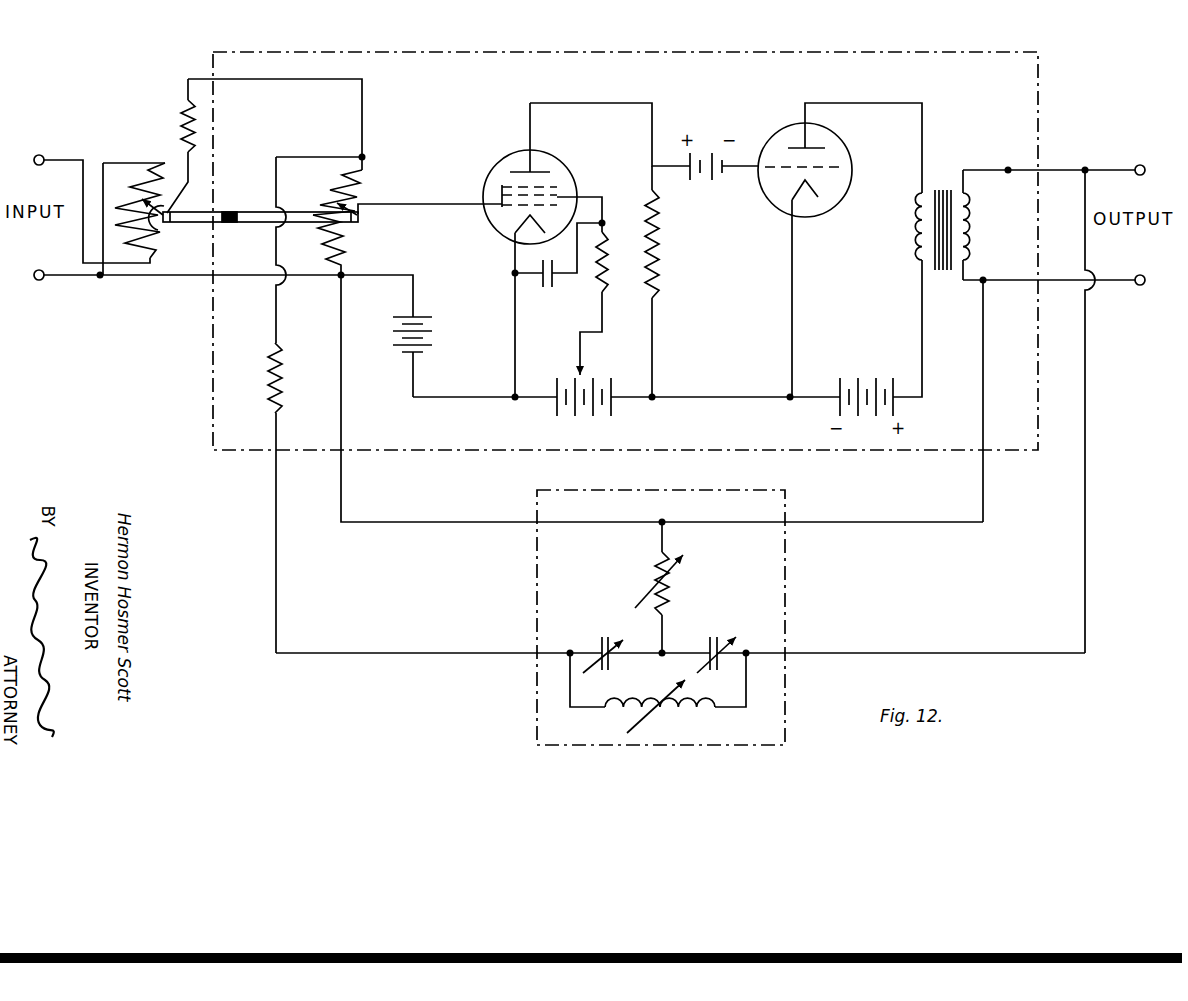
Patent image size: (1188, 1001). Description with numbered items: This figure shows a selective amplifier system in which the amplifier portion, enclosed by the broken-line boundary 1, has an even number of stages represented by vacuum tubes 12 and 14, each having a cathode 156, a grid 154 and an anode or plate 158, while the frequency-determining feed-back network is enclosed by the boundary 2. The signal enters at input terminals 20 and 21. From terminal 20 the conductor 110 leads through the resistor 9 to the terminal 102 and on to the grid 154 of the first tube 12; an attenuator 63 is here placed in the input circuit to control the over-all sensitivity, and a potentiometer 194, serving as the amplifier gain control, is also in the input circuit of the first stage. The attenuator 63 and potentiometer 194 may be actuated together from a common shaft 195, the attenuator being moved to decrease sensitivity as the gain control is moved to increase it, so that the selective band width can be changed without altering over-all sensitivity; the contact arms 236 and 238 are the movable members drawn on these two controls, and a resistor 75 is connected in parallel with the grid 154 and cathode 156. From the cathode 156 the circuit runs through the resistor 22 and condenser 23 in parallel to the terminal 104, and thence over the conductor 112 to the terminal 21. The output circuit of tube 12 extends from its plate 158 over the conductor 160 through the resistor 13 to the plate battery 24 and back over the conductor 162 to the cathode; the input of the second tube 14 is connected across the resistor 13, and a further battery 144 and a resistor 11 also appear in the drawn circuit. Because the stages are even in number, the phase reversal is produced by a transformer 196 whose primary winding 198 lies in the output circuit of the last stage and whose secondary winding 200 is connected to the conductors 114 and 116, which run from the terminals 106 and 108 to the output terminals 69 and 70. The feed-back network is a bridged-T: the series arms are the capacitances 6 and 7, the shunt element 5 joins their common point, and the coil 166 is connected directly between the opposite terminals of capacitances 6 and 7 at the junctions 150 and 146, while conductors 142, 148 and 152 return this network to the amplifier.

The amplifier unit 1 is at (737, 50).
The tuned circuit unit 2 is at (595, 746).
The circuit element 5 is at (668, 587).
The capacitance 6 is at (607, 638).
The capacitance 7 is at (718, 635).
The resistor 9 is at (186, 116).
The resistor 11 is at (285, 347).
The vacuum tube 12 is at (512, 152).
The resistor 13 is at (660, 243).
The vacuum tube 14 is at (848, 142).
The terminal 20 is at (41, 154).
The terminal 21 is at (40, 281).
The resistor 22 is at (608, 245).
The condenser 23 is at (560, 287).
The plate battery 24 is at (612, 383).
The attenuator 63 is at (143, 172).
The output terminal 69 is at (1141, 164).
The output terminal 70 is at (1140, 286).
The resistor 75 is at (347, 256).
The terminal 102 is at (392, 217).
The terminal 104 is at (511, 393).
The terminal 106 is at (1008, 167).
The terminal 108 is at (343, 278).
The conductor 110 is at (70, 157).
The conductor 112 is at (77, 278).
The conductor 114 is at (1063, 168).
The conductor 116 is at (1057, 280).
The conductor 142 is at (405, 520).
The battery 144 is at (390, 275).
The junction 146 is at (750, 647).
The conductor 148 is at (878, 655).
The junction 150 is at (570, 647).
The conductor 152 is at (368, 655).
The grid 154 is at (560, 193).
The cathode 156 is at (537, 227).
The anode 158 is at (540, 170).
The conductor 160 is at (607, 103).
The conductor 162 is at (533, 399).
The coil 166 is at (700, 715).
The potentiometer 194 is at (365, 178).
The common shaft 195 is at (197, 211).
The transformer 196 is at (939, 204).
The primary winding 198 is at (916, 223).
The secondary winding 200 is at (976, 233).
The contact arm 236 is at (352, 202).
The contact arm 238 is at (159, 229).